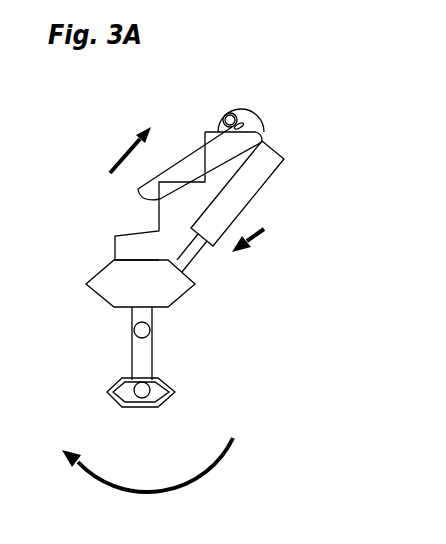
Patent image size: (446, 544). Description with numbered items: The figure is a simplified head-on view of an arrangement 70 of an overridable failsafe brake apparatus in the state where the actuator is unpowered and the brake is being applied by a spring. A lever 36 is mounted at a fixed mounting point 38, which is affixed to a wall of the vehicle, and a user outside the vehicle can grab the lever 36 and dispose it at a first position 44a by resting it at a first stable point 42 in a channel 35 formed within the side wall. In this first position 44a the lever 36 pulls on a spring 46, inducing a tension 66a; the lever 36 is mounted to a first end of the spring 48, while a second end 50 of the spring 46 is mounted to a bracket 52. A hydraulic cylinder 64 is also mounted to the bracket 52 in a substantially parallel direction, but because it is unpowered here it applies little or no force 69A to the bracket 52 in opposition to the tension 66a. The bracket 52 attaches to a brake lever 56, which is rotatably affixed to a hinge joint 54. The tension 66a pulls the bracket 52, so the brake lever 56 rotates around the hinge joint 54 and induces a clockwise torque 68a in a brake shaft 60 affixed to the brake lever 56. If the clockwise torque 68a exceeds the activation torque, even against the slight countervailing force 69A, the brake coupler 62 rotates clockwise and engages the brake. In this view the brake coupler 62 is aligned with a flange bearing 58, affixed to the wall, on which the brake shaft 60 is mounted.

The arrangement 70 is at (341, 44).
The channel 35 is at (264, 130).
The lever 36 is at (238, 106).
The fixed mounting point 38 is at (238, 106).
The first stable point 42 is at (218, 127).
The first position 44a is at (224, 94).
The spring 46 is at (138, 234).
The first end of the spring 48 is at (264, 142).
The second end of the spring 50 is at (110, 259).
The bracket 52 is at (92, 275).
The hinge joint 54 is at (133, 331).
The brake lever 56 is at (153, 351).
The flange bearing 58 is at (108, 388).
The brake shaft 60 is at (120, 405).
The brake coupler 62 is at (160, 383).
The hydraulic cylinder 64 is at (216, 247).
The tension 66a is at (123, 157).
The clockwise torque 68a is at (93, 484).
The force 69A is at (262, 230).